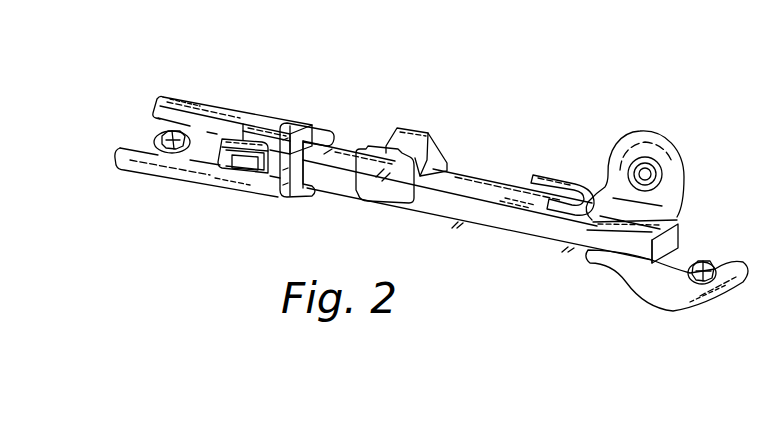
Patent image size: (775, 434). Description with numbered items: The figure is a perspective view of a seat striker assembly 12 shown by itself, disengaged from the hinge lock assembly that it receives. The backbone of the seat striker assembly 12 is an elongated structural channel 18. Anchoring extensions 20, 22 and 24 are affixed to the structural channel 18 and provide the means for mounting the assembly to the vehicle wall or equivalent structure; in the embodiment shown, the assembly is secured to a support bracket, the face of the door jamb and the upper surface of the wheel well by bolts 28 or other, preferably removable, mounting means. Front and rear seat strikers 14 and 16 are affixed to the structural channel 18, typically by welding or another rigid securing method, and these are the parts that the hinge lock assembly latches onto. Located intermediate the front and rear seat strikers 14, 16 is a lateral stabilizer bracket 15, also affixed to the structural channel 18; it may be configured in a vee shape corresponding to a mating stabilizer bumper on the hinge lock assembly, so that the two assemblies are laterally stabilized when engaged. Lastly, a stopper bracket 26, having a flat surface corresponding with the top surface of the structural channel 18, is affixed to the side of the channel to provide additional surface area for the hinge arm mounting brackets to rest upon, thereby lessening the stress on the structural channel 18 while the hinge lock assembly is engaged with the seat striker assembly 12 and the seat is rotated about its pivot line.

The seat striker assembly 12 is at (670, 94).
The front seat striker 14 is at (557, 182).
The lateral stabilizer bracket 15 is at (370, 202).
The rear seat striker 16 is at (323, 126).
The structural channel 18 is at (447, 208).
The anchoring extension 20 is at (642, 283).
The anchoring extension 22 is at (203, 98).
The anchoring extension 24 is at (670, 134).
The stopper bracket 26 is at (207, 156).
The bolt 28 is at (164, 138).